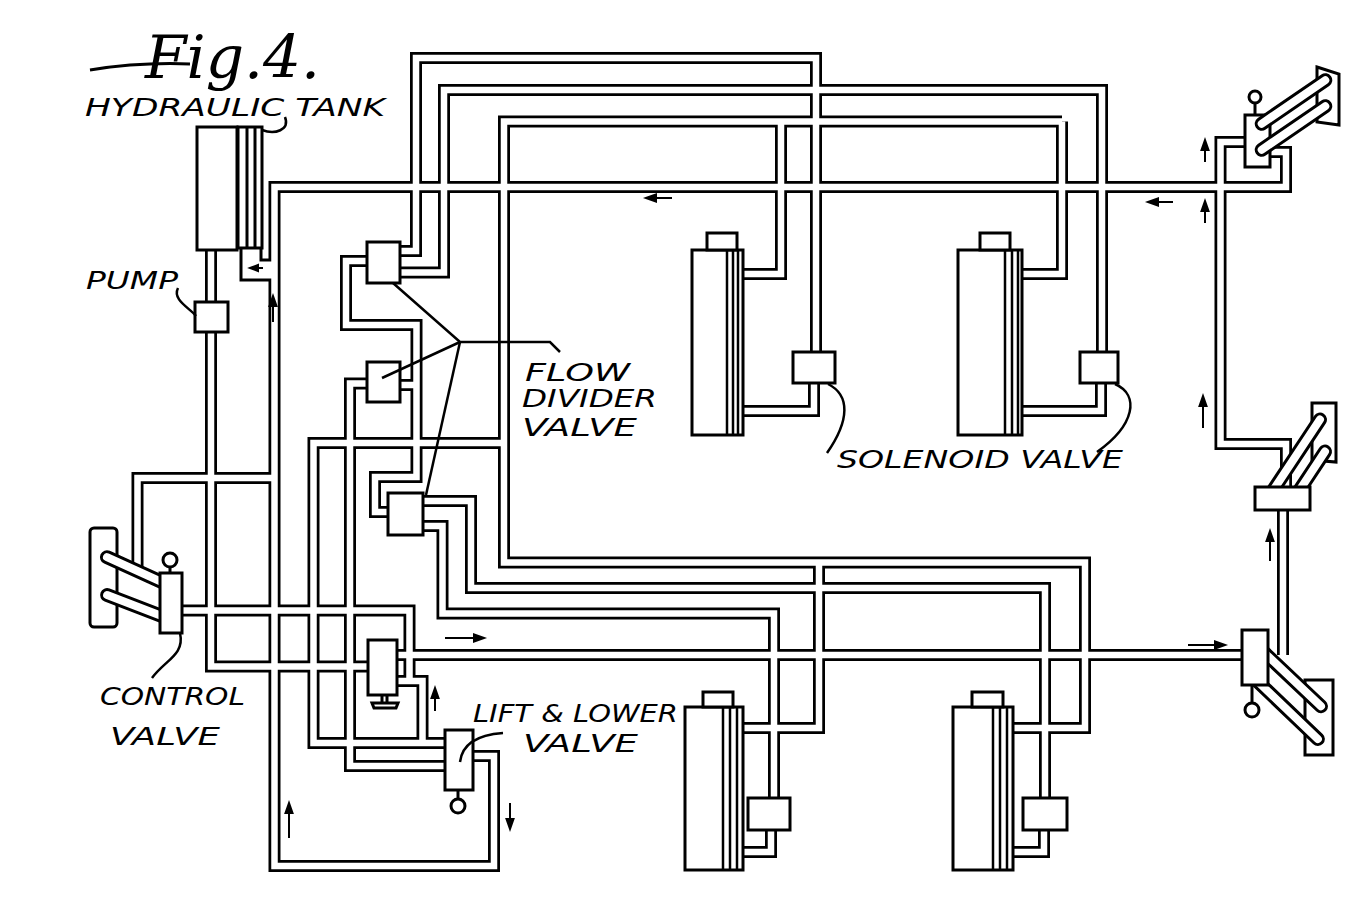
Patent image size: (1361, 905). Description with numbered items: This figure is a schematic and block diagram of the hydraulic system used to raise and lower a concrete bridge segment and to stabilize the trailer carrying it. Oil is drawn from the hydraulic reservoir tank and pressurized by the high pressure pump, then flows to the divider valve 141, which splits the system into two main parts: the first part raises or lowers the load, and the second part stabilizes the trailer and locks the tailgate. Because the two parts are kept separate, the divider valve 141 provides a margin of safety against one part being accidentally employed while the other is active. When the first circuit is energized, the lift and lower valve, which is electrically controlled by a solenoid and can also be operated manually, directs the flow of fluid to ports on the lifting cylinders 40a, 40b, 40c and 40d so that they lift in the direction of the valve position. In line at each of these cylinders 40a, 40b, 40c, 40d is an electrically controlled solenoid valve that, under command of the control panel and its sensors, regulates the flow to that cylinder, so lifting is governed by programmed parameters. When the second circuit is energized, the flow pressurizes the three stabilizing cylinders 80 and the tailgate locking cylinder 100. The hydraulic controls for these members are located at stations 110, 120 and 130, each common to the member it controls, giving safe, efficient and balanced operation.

The stabilizing cylinders 80 is at (1317, 70).
The station 130 is at (1249, 97).
The tailgate locking cylinder 100 is at (1322, 402).
The station 120 is at (1255, 495).
The station 110 is at (1242, 688).
The divider valve 141 is at (397, 663).
The cylinder 40a is at (690, 815).
The cylinder 40b is at (953, 834).
The cylinder 40c is at (692, 327).
The cylinder 40d is at (980, 333).